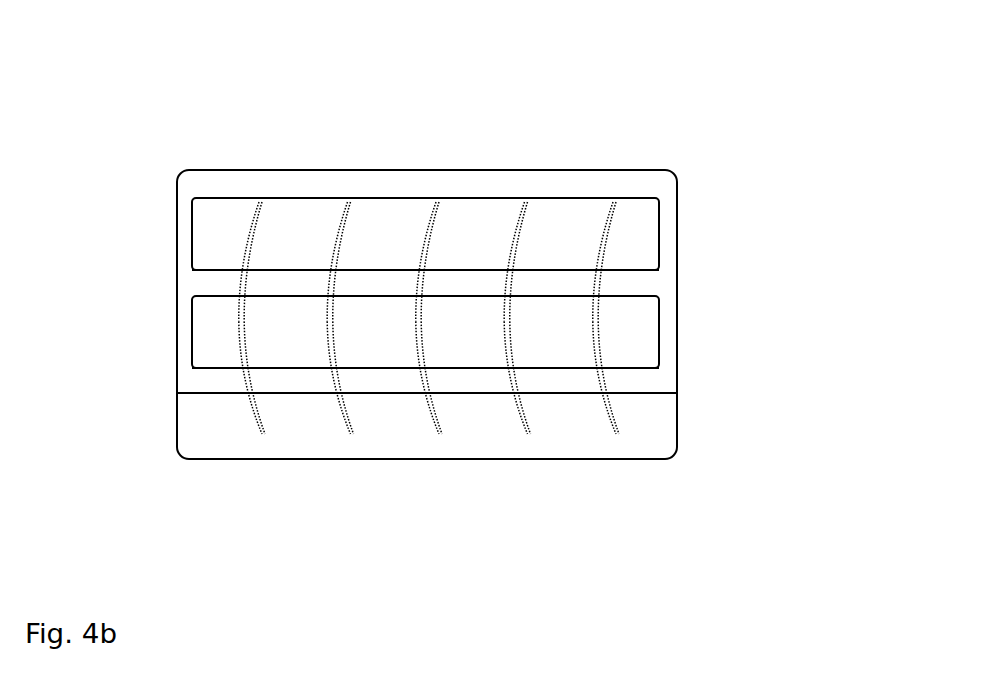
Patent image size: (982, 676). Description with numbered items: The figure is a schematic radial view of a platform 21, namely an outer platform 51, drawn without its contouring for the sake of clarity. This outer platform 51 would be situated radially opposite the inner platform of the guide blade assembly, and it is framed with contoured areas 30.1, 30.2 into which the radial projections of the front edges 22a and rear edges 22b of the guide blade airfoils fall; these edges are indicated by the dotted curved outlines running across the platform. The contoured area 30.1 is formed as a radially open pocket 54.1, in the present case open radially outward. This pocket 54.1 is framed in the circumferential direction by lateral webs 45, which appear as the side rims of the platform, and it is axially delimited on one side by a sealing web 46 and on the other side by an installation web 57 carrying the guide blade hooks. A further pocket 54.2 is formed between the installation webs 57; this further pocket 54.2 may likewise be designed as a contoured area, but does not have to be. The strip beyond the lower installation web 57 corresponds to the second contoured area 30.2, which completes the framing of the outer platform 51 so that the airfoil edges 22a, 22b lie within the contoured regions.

The platform 21 is at (192, 102).
The outer platform 51 is at (192, 102).
The front edges 22a is at (268, 202).
The rear edges 22b is at (270, 438).
The lateral webs 45 is at (185, 262).
The sealing web 46 is at (473, 182).
The installation web 57 is at (463, 283).
The contoured area 30.1 is at (642, 239).
The radially open pocket 54.1 is at (722, 239).
The further pocket 54.2 is at (633, 349).
The contoured area 30.2 is at (643, 433).